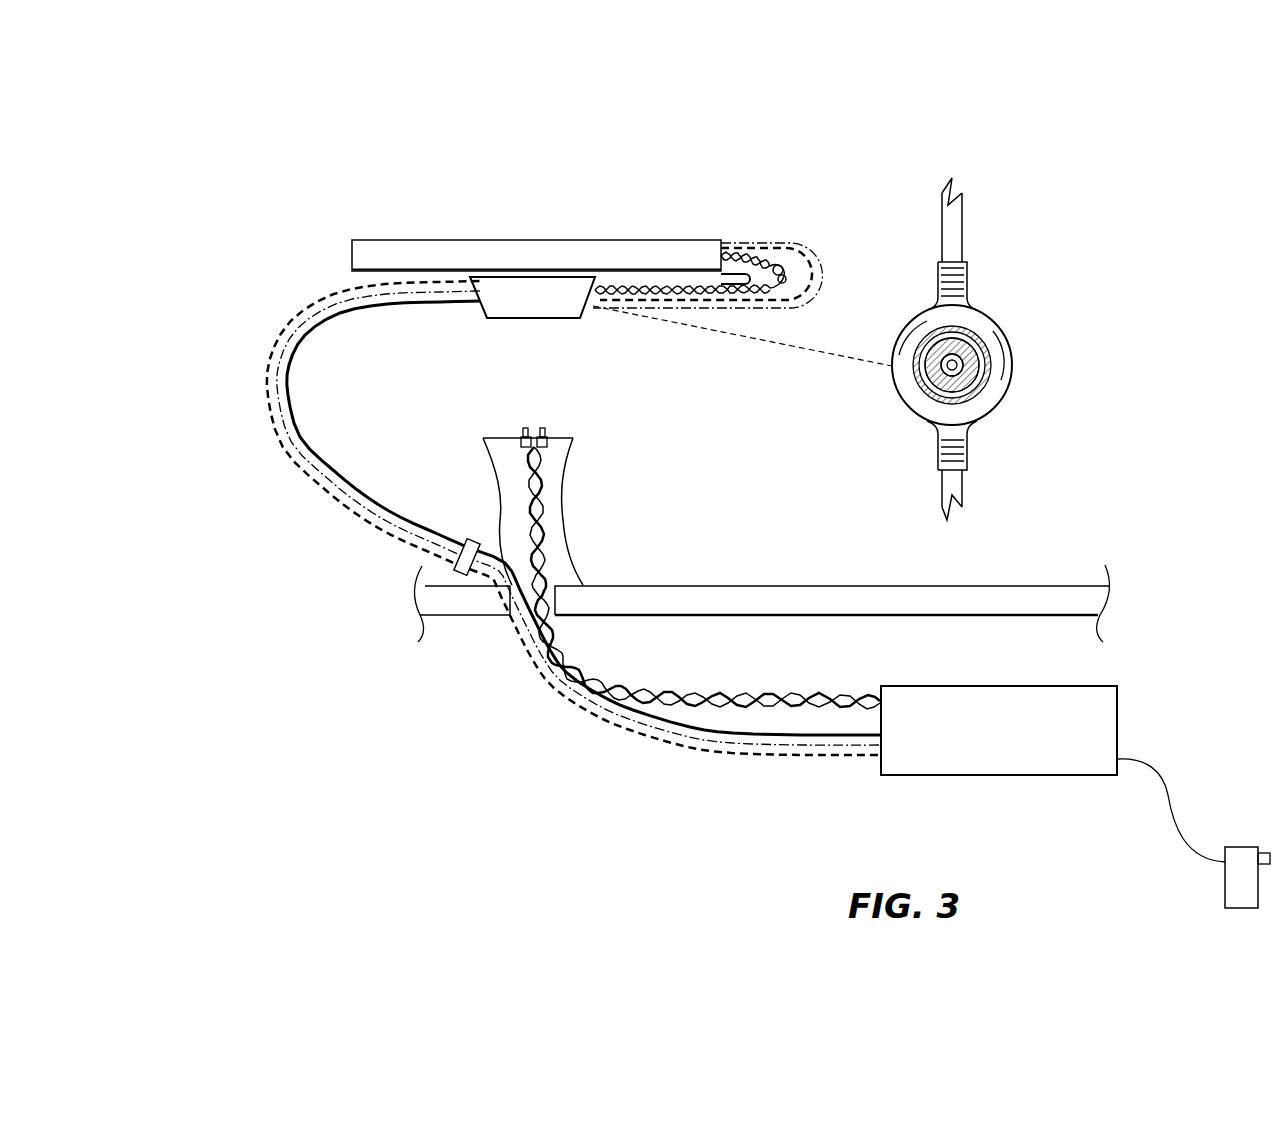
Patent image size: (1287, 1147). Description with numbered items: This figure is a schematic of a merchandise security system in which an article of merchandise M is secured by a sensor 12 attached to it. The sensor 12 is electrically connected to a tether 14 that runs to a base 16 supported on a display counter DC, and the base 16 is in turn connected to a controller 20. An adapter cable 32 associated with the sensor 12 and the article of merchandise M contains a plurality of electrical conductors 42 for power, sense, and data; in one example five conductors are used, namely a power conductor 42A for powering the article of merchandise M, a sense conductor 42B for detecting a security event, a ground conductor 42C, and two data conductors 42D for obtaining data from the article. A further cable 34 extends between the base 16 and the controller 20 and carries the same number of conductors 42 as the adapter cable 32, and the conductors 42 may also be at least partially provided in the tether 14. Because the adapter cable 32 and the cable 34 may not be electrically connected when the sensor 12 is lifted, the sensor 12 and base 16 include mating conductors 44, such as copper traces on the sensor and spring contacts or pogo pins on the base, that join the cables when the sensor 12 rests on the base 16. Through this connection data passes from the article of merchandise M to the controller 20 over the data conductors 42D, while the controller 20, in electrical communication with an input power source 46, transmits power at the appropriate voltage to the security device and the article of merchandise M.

The sensor 12 is at (483, 314).
The tether 14 is at (627, 508).
The base 16 is at (485, 463).
The controller 20 is at (1133, 726).
The adapter cable 32 is at (778, 232).
The cable 34 is at (521, 661).
The electrical conductors 42 is at (792, 287).
The power conductor 42A is at (700, 300).
The sense conductor 42B is at (804, 244).
The ground conductor 42C is at (362, 484).
The data conductors 42D is at (790, 274).
The conductors 44 is at (797, 475).
The input power source 46 is at (1243, 850).
The article of merchandise M is at (567, 240).
The display counter DC is at (778, 585).